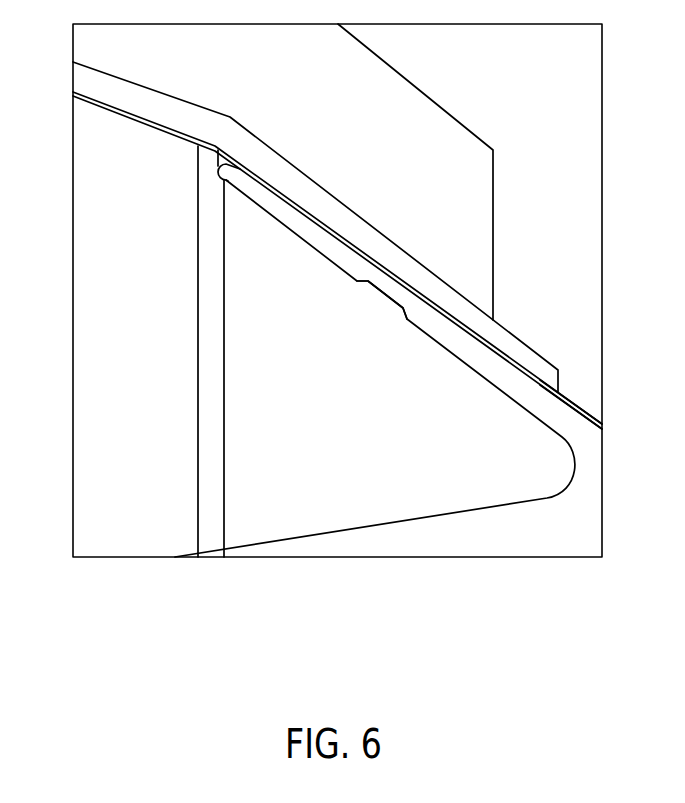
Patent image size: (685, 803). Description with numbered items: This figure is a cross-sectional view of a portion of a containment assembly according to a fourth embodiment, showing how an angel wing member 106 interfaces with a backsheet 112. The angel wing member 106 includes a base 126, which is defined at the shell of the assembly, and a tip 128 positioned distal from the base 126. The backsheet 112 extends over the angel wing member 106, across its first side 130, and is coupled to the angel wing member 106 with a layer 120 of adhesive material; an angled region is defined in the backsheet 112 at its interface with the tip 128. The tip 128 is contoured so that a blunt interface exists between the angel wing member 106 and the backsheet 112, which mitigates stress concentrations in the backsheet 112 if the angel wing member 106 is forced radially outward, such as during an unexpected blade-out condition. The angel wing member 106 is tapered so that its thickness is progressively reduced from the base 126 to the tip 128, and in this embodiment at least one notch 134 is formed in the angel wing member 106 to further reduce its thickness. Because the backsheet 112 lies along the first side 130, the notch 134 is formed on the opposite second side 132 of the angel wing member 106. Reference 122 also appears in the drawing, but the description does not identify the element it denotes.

The angel wing member 106 is at (453, 352).
The backsheet 112 is at (476, 308).
The layer 120 is at (140, 124).
The wall 122 is at (494, 204).
The base 126 is at (568, 416).
The tip 128 is at (217, 162).
The first side 130 is at (278, 188).
The second side 132 is at (240, 188).
The notch 134 is at (383, 290).